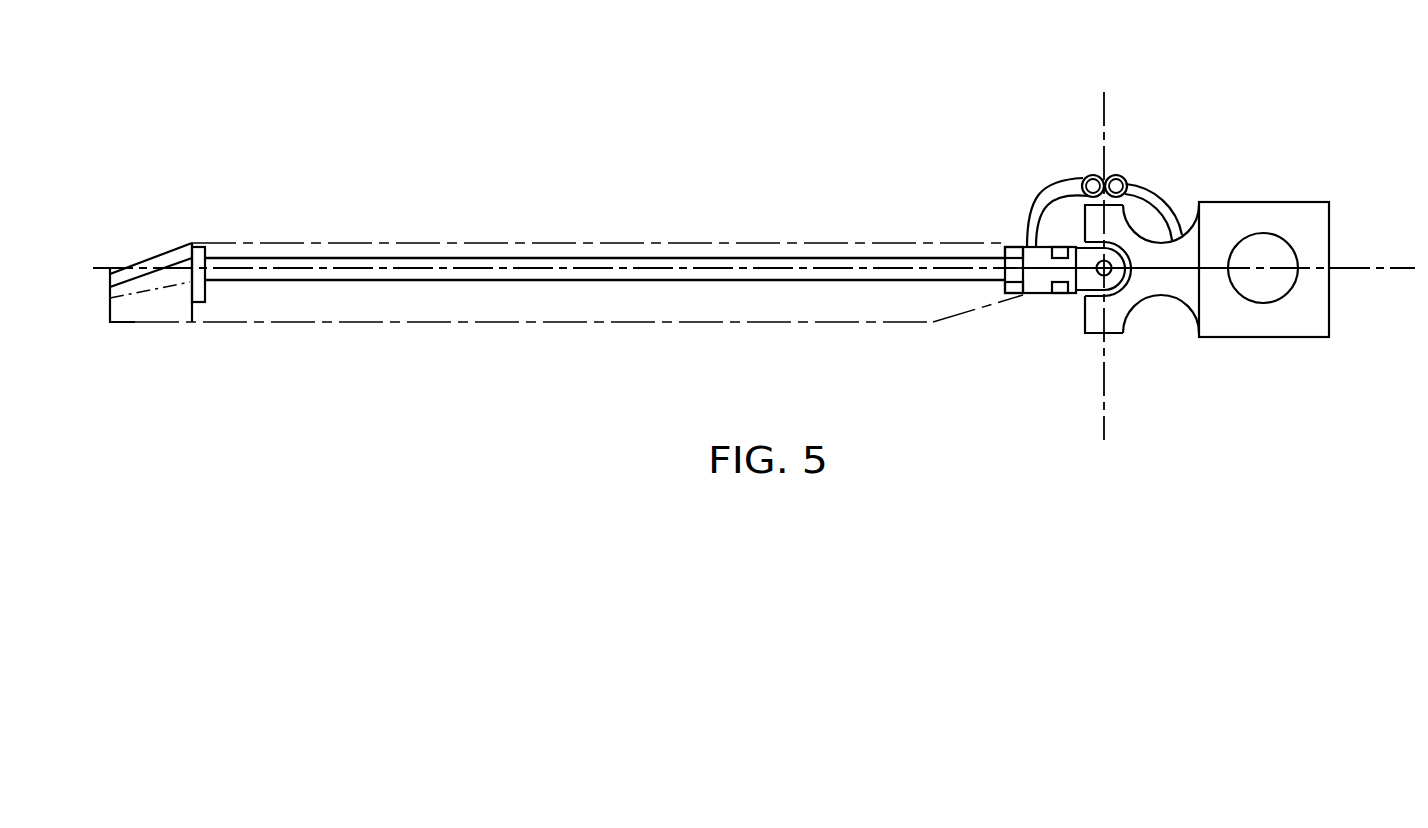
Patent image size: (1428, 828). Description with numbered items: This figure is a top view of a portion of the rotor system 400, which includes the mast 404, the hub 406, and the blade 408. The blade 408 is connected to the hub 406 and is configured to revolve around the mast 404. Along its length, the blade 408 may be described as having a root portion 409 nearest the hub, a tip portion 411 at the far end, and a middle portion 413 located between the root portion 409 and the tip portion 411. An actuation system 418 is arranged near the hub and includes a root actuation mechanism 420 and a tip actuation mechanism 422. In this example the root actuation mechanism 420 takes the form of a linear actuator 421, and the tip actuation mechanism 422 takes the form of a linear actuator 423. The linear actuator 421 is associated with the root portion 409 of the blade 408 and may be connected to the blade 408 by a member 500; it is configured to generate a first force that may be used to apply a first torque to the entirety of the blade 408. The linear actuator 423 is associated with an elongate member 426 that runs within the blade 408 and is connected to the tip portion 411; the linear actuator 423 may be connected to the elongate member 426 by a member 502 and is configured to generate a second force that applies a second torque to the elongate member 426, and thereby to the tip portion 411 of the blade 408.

The rotor system 400 is at (1279, 137).
The mast 404 is at (1283, 280).
The hub 406 is at (1240, 269).
The blade 408 is at (226, 243).
The root portion 409 is at (1083, 343).
The tip portion 411 is at (112, 343).
The middle portion 413 is at (599, 293).
The actuation system 418 is at (1098, 93).
The root actuation mechanism 420 is at (1092, 161).
The linear actuator 421 is at (1083, 177).
The tip actuation mechanism 422 is at (1122, 156).
The linear actuator 423 is at (1122, 173).
The elongate member 426 is at (605, 236).
The member 500 is at (1030, 222).
The member 502 is at (1181, 230).